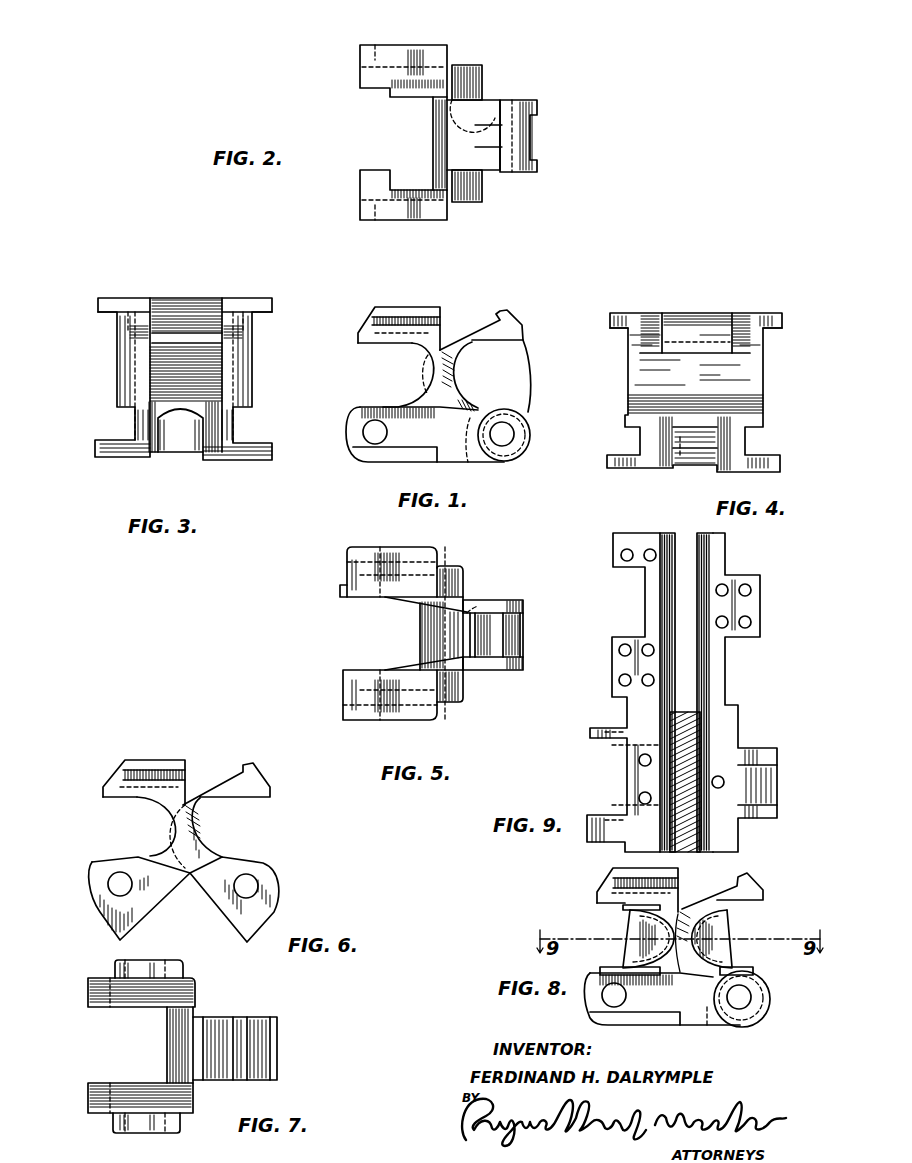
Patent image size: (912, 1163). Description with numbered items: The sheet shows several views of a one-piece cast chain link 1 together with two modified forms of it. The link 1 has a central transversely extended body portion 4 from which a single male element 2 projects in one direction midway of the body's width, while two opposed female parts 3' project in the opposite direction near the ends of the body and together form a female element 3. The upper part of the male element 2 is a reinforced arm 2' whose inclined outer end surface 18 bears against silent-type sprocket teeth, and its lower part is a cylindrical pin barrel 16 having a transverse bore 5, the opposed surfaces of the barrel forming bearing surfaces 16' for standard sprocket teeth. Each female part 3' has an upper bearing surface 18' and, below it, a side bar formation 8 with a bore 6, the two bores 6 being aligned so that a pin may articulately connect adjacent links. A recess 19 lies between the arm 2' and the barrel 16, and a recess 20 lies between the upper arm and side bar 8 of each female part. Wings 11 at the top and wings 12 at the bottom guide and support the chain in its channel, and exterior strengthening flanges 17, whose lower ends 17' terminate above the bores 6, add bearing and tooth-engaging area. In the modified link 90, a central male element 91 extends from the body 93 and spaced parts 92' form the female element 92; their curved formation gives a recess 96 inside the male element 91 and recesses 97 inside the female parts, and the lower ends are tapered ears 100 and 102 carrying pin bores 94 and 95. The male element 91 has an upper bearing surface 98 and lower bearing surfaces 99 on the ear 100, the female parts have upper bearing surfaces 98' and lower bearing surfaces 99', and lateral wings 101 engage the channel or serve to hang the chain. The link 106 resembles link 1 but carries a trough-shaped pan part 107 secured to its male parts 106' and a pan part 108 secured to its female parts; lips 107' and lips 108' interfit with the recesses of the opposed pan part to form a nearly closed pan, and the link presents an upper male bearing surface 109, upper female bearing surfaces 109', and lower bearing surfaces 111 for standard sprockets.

In FIG. 2, the chain link 1 is at (322, 66).
In FIG. 3, the chain link 1 is at (133, 298).
In FIG. 1, the chain link 1 is at (458, 302).
In FIG. 4, the chain link 1 is at (770, 300).
In FIG. 5, the chain link 1 is at (495, 570).
In FIG. 2, the male element 2 is at (531, 136).
In FIG. 3, the male element 2 is at (187, 380).
In FIG. 1, the male element 2 is at (494, 386).
In FIG. 4, the male element 2 is at (707, 289).
In FIG. 5, the male element 2 is at (506, 625).
In FIG. 2, the reinforced arm 2' is at (523, 98).
In FIG. 3, the reinforced arm 2' is at (206, 288).
In FIG. 1, the reinforced arm 2' is at (495, 304).
In FIG. 4, the reinforced arm 2' is at (719, 302).
In FIG. 2, the female element 3 is at (382, 132).
In FIG. 3, the female element 3 is at (180, 374).
In FIG. 1, the female element 3 is at (419, 384).
In FIG. 4, the female element 3 is at (705, 369).
In FIG. 5, the female element 3 is at (366, 633).
In FIG. 2, the female parts 3' is at (356, 141).
In FIG. 3, the female parts 3' is at (183, 290).
In FIG. 1, the female parts 3' is at (351, 313).
In FIG. 4, the female parts 3' is at (699, 307).
In FIG. 5, the female parts 3' is at (336, 635).
In FIG. 2, the body portion 4 is at (437, 130).
In FIG. 3, the body portion 4 is at (185, 384).
In FIG. 1, the body portion 4 is at (434, 376).
In FIG. 4, the body portion 4 is at (695, 374).
In FIG. 5, the body portion 4 is at (426, 641).
In FIG. 9, the body portion 4 is at (685, 782).
In FIG. 8, the body portion 4 is at (681, 914).
In FIG. 1, the transverse bore 5 is at (500, 448).
In FIG. 4, the transverse bore 5 is at (680, 458).
In FIG. 5, the transverse bore 5 is at (525, 625).
In FIG. 3, the bore 6 is at (135, 445).
In FIG. 1, the bore 6 is at (370, 433).
In FIG. 5, the bore 6 is at (410, 603).
In FIG. 2, the side bar formation 8 is at (360, 97).
In FIG. 3, the side bar formation 8 is at (135, 428).
In FIG. 1, the side bar formation 8 is at (346, 425).
In FIG. 5, the side bar formation 8 is at (343, 590).
In FIG. 2, the wings 11 is at (400, 47).
In FIG. 3, the wings 11 is at (98, 306).
In FIG. 1, the wings 11 is at (426, 308).
In FIG. 4, the wings 11 is at (606, 322).
In FIG. 5, the wings 11 is at (365, 560).
In FIG. 2, the wings 12 is at (365, 56).
In FIG. 3, the wings 12 is at (97, 446).
In FIG. 1, the wings 12 is at (378, 456).
In FIG. 4, the wings 12 is at (607, 462).
In FIG. 5, the wings 12 is at (430, 556).
In FIG. 3, the pin barrel 16 is at (167, 484).
In FIG. 1, the pin barrel 16 is at (525, 473).
In FIG. 4, the pin barrel 16 is at (692, 469).
In FIG. 5, the pin barrel 16 is at (523, 635).
In FIG. 2, the bearing surfaces 16' is at (570, 128).
In FIG. 3, the bearing surfaces 16' is at (177, 446).
In FIG. 1, the bearing surfaces 16' is at (510, 464).
In FIG. 4, the bearing surfaces 16' is at (706, 478).
In FIG. 5, the bearing surfaces 16' is at (519, 628).
In FIG. 2, the exterior strengthening flanges 17 is at (467, 141).
In FIG. 3, the exterior strengthening flanges 17 is at (184, 372).
In FIG. 1, the exterior strengthening flanges 17 is at (411, 395).
In FIG. 4, the exterior strengthening flanges 17 is at (700, 384).
In FIG. 5, the exterior strengthening flanges 17 is at (457, 639).
In FIG. 3, the lower ends of flanges 17' is at (182, 406).
In FIG. 1, the lower ends of flanges 17' is at (369, 392).
In FIG. 4, the lower ends of flanges 17' is at (703, 437).
In FIG. 5, the lower ends of flanges 17' is at (326, 635).
In FIG. 2, the outer end surface 18 is at (536, 189).
In FIG. 1, the outer end surface 18 is at (531, 301).
In FIG. 4, the outer end surface 18 is at (697, 315).
In FIG. 2, the bearing surface 18' is at (338, 136).
In FIG. 3, the bearing surface 18' is at (208, 287).
In FIG. 1, the bearing surface 18' is at (368, 293).
In FIG. 2, the recess 19 is at (476, 98).
In FIG. 1, the recess 19 is at (476, 373).
In FIG. 4, the recess 19 is at (712, 378).
In FIG. 5, the recess 19 is at (460, 650).
In FIG. 2, the recess 20 is at (420, 58).
In FIG. 3, the recess 20 is at (125, 355).
In FIG. 1, the recess 20 is at (422, 371).
In FIG. 5, the recess 20 is at (400, 565).
In FIG. 6, the one-piece link 90 is at (213, 760).
In FIG. 7, the one-piece link 90 is at (210, 986).
In FIG. 6, the central male element 91 is at (270, 853).
In FIG. 7, the central male element 91 is at (278, 1050).
In FIG. 6, the female element 92 is at (131, 850).
In FIG. 7, the female element 92 is at (121, 1046).
In FIG. 6, the female parts 92' is at (79, 837).
In FIG. 7, the female parts 92' is at (65, 1042).
In FIG. 6, the body 93 is at (186, 810).
In FIG. 7, the body 93 is at (170, 1040).
In FIG. 6, the pin bore 94 is at (258, 886).
In FIG. 7, the pin bore 94 is at (275, 1036).
In FIG. 6, the pin bores 95 is at (100, 873).
In FIG. 7, the pin bores 95 is at (90, 1000).
In FIG. 6, the recess 96 is at (219, 835).
In FIG. 7, the recess 96 is at (195, 1030).
In FIG. 6, the recesses 97 is at (150, 833).
In FIG. 7, the recesses 97 is at (150, 1000).
In FIG. 6, the upper bearing surface 98 is at (276, 770).
In FIG. 6, the upper bearing surfaces 98' is at (101, 755).
In FIG. 6, the lower bearing surfaces 99 is at (247, 928).
In FIG. 7, the lower bearing surfaces 99 is at (240, 1095).
In FIG. 6, the lower bearing surfaces 99' is at (115, 927).
In FIG. 7, the lower bearing surfaces 99' is at (145, 1050).
In FIG. 6, the ear 100 is at (270, 868).
In FIG. 7, the ear 100 is at (260, 1020).
In FIG. 6, the lateral wings 101 is at (157, 765).
In FIG. 7, the lateral wings 101 is at (150, 968).
In FIG. 6, the ears 102 is at (95, 865).
In FIG. 7, the ears 102 is at (90, 995).
In FIG. 9, the link 106 is at (790, 833).
In FIG. 8, the link 106 is at (636, 1001).
In FIG. 9, the male parts 106' is at (801, 745).
In FIG. 8, the male parts 106' is at (790, 933).
In FIG. 9, the pan part 107 is at (735, 680).
In FIG. 8, the pan part 107 is at (746, 939).
In FIG. 9, the lips 107' is at (783, 598).
In FIG. 8, the lips 107' is at (750, 942).
In FIG. 9, the pan part 108 is at (623, 680).
In FIG. 8, the pan part 108 is at (636, 939).
In FIG. 9, the lips 108' is at (593, 614).
In FIG. 8, the lips 108' is at (620, 940).
In FIG. 8, the upper male bearing surface 109 is at (739, 891).
In FIG. 8, the upper female bearing surfaces 109' is at (620, 889).
In FIG. 9, the lower bearing surfaces 111 is at (778, 786).
In FIG. 8, the lower bearing surfaces 111 is at (768, 1004).